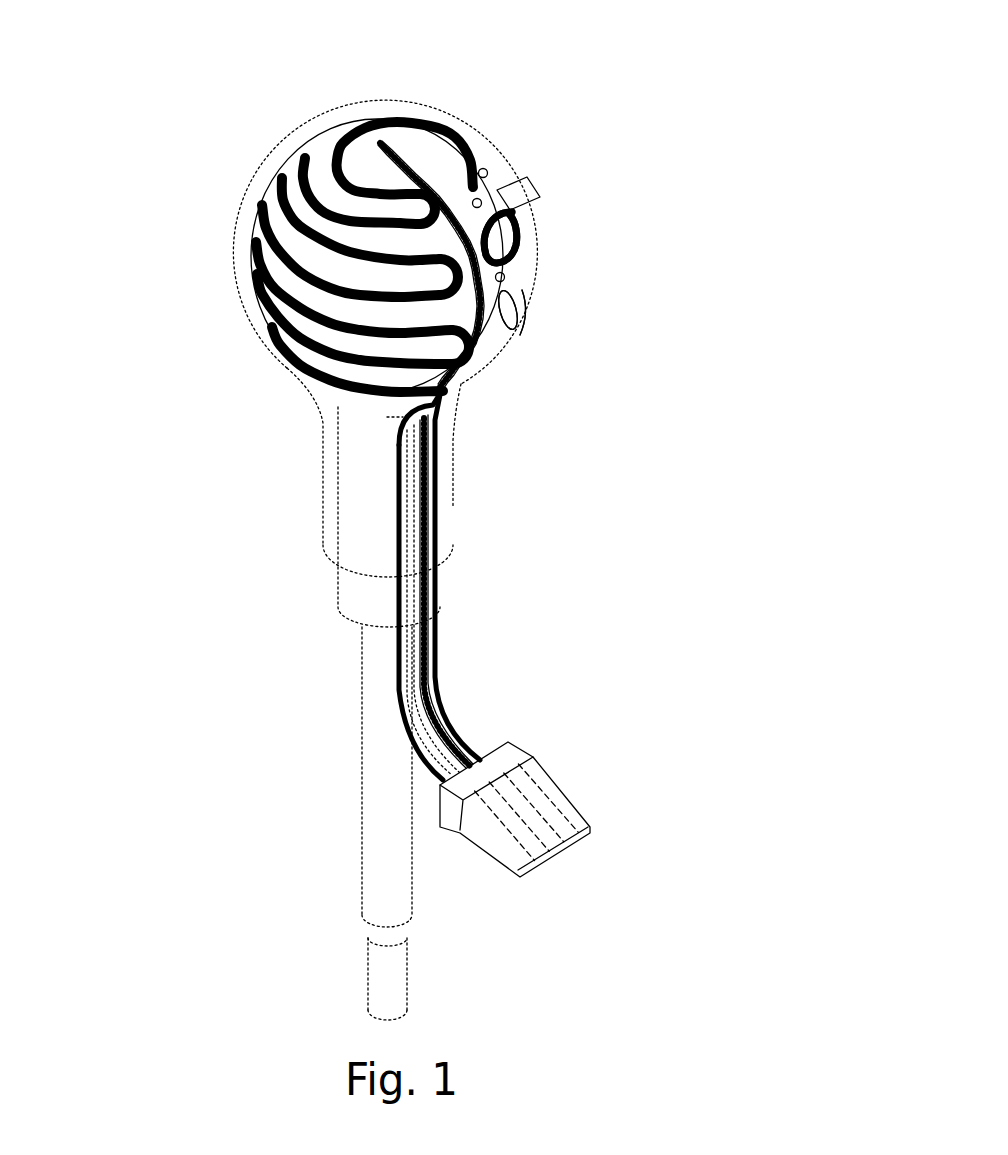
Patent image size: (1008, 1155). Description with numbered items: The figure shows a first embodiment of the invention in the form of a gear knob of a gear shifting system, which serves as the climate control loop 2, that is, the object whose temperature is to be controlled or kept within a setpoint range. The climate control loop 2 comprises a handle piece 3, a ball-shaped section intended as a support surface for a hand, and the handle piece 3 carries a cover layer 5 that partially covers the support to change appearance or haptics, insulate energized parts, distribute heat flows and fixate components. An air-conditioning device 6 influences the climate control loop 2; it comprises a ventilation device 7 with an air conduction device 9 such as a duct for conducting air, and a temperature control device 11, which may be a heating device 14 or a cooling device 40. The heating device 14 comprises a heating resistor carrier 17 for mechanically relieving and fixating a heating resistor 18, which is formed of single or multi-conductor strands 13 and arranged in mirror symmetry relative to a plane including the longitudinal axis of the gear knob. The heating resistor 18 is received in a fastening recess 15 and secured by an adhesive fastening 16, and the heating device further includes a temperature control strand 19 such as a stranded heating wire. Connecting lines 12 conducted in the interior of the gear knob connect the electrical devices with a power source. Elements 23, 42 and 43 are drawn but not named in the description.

The climate control loop 2 is at (237, 190).
The handle piece 3 is at (282, 346).
The cover layer 5 is at (499, 124).
The air-conditioning device 6 is at (508, 205).
The ventilation device 7 is at (532, 277).
The air conduction device 9 is at (478, 728).
The temperature control device 11 is at (535, 320).
The connecting line 12 is at (420, 541).
The strand 13 is at (448, 529).
The heating device 14 is at (502, 221).
The fastening recess 15 is at (638, 326).
The adhesive fastening 16 is at (447, 387).
The heating resistor carrier 17 is at (354, 534).
The heating resistor 18 is at (684, 326).
The temperature control strand 19 is at (713, 326).
The heating conductor loop 23 is at (380, 106).
The cooling device 40 is at (624, 227).
The knob body lower part 42 is at (262, 352).
The knob surface 43 is at (267, 136).